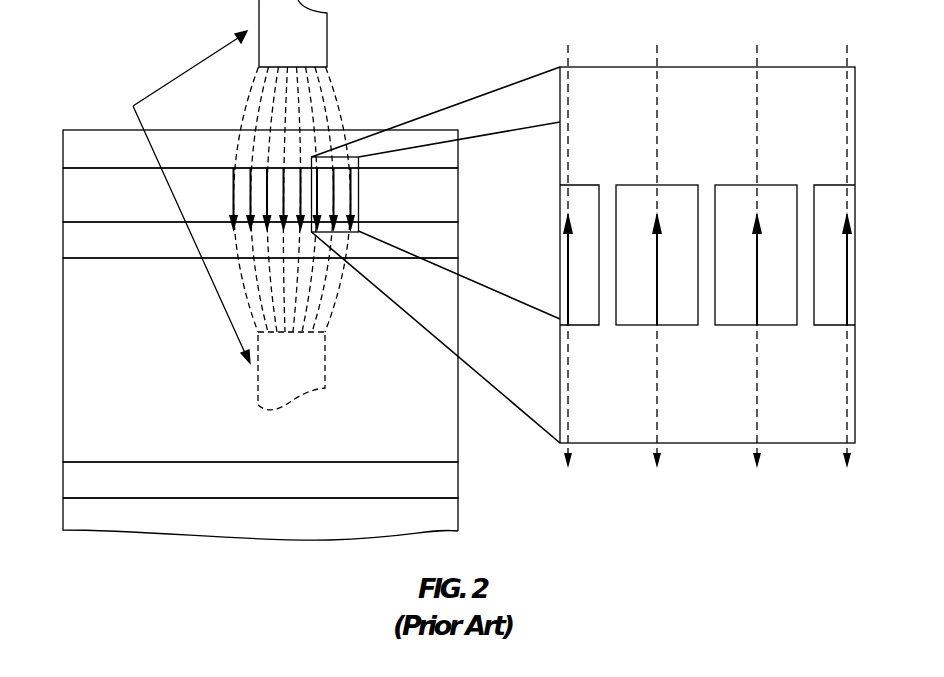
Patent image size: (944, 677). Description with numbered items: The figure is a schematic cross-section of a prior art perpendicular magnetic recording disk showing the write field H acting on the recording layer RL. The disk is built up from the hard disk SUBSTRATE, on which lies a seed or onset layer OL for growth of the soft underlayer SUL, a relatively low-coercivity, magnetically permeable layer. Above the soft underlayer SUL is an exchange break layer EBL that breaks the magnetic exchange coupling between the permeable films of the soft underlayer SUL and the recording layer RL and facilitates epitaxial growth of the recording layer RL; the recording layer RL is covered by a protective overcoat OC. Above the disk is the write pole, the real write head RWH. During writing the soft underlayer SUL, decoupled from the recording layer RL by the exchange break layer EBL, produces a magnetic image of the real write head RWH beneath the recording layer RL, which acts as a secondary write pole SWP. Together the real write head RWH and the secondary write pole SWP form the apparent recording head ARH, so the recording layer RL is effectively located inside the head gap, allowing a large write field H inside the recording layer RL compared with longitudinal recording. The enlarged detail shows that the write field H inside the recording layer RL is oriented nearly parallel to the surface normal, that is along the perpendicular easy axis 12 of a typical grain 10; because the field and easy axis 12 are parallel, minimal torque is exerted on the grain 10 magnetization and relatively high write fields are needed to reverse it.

The grain 10 is at (740, 193).
The easy axis 12 is at (757, 292).
The protective overcoat OC is at (260, 149).
The recording layer RL is at (260, 195).
The exchange break layer EBL is at (260, 240).
The soft underlayer SUL is at (260, 360).
The onset layer OL is at (260, 480).
The hard disk substrate SUBSTRATE is at (260, 519).
The real write head RWH is at (293, 33).
The apparent recording head ARH is at (166, 197).
The secondary write pole SWP is at (291, 371).
The write field H is at (707, 272).